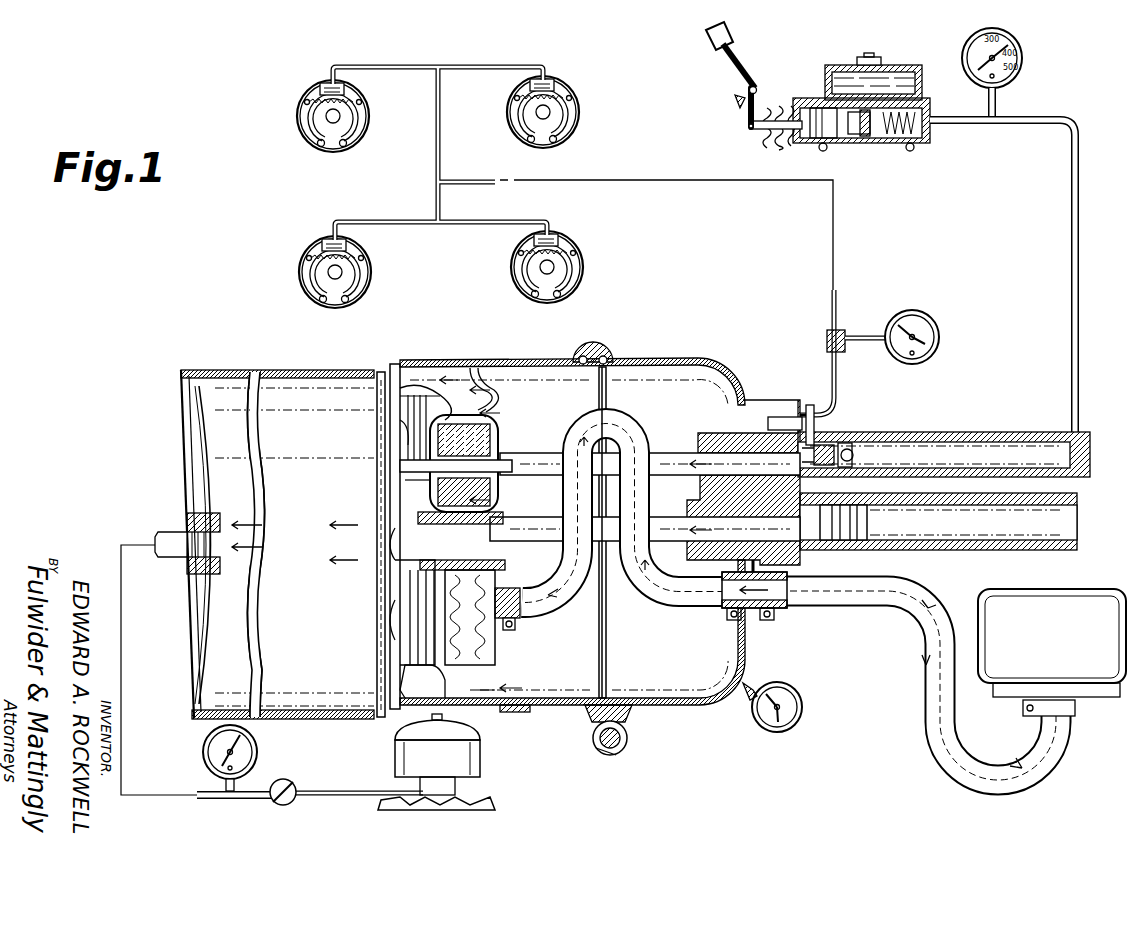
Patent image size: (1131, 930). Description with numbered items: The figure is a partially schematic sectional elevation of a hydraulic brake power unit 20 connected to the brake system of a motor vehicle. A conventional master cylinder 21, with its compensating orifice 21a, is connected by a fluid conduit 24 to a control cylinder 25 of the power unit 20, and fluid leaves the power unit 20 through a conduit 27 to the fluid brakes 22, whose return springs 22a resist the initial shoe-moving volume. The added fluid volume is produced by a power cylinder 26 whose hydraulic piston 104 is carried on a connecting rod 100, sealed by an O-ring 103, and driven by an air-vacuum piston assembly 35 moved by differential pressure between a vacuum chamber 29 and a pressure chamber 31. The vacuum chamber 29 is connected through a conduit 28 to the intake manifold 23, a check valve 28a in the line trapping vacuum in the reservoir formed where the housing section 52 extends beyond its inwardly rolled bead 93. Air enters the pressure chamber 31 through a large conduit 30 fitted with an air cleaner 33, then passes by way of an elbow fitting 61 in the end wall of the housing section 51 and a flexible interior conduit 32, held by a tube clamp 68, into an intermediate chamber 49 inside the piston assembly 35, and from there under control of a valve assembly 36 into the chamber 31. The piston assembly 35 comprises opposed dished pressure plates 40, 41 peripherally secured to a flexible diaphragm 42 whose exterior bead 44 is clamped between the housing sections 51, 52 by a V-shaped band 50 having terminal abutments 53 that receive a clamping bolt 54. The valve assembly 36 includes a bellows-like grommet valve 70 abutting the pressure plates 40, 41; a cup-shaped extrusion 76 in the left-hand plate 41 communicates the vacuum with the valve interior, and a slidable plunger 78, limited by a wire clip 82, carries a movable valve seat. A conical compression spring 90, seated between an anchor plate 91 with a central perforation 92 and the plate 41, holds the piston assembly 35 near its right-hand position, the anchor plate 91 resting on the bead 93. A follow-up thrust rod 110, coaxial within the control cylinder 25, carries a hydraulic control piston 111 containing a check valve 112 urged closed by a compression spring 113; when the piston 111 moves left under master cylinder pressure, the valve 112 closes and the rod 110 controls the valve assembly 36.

The power unit 20 is at (615, 300).
The master cylinder 21 is at (862, 143).
The compensating orifice 21a is at (848, 65).
The fluid brakes 22 is at (371, 143).
The return springs 22a is at (320, 84).
The intake manifold 23 is at (380, 804).
The fluid conduit 24 is at (1080, 255).
The control cylinder 25 is at (985, 423).
The power cylinder 26 is at (991, 551).
The conduit 27 is at (848, 302).
The conduit 28 is at (163, 555).
The check valve 28a is at (298, 782).
The vacuum chamber 29 is at (350, 370).
The conduit 30 is at (880, 606).
The pressure chamber 31 is at (718, 690).
The flexible interior conduit 32 is at (564, 603).
The air cleaner 33 is at (1070, 588).
The air-vacuum piston assembly 35 is at (487, 375).
The valve assembly 36 is at (500, 440).
The pressure plate 40 is at (488, 657).
The pressure plate 41 is at (434, 674).
The flexible diaphragm 42 is at (548, 698).
The exterior bead 44 is at (600, 343).
The intermediate chamber 49 is at (496, 592).
The V-shaped band 50 is at (608, 345).
The housing section 51 is at (757, 648).
The housing section 52 is at (516, 708).
The terminal abutments 53 is at (598, 750).
The clamping bolt 54 is at (628, 738).
The elbow fitting 61 is at (730, 620).
The tube clamp 68 is at (515, 630).
The grommet valve 70 is at (405, 480).
The cup-shaped extrusion 76 is at (406, 440).
The plunger 78 is at (400, 468).
The wire clip 82 is at (378, 450).
The conical compression spring 90 is at (422, 418).
The anchor plate 91 is at (398, 396).
The central perforation 92 is at (405, 540).
The inwardly rolled bead 93 is at (396, 365).
The connecting rod 100 is at (668, 517).
The sealing O-ring 103 is at (466, 526).
The hydraulic piston 104 is at (872, 528).
The follow-up thrust rod 110 is at (668, 453).
The hydraulic piston 111 is at (860, 425).
The check valve 112 is at (886, 450).
The compression spring 113 is at (850, 480).